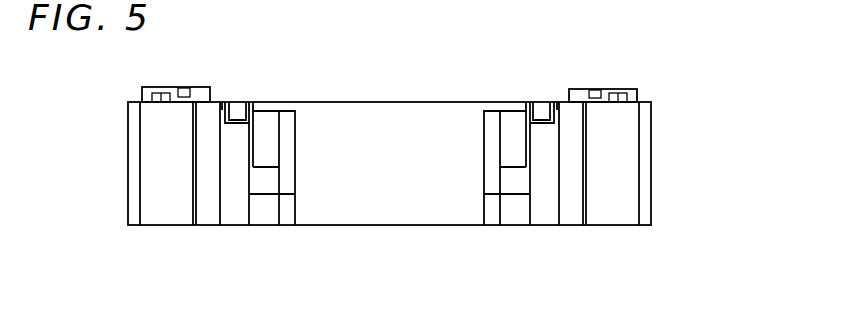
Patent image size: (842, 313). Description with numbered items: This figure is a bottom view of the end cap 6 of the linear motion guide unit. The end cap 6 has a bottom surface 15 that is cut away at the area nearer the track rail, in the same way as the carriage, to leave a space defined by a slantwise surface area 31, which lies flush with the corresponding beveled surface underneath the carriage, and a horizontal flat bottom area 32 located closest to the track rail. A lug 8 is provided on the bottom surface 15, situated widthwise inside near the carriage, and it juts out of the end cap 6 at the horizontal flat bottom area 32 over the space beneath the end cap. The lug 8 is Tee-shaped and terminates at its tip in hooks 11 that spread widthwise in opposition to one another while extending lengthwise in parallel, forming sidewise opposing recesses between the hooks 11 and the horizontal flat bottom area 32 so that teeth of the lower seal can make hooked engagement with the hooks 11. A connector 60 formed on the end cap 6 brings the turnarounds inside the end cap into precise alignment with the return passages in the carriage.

The end cap 6 is at (412, 101).
The lug 8 is at (237, 108).
The hooks 11 is at (219, 102).
The bottom surface 15 is at (160, 168).
The slantwise surface area 31 is at (208, 203).
The horizontal flat bottom area 32 is at (233, 203).
The connector 60 is at (168, 93).